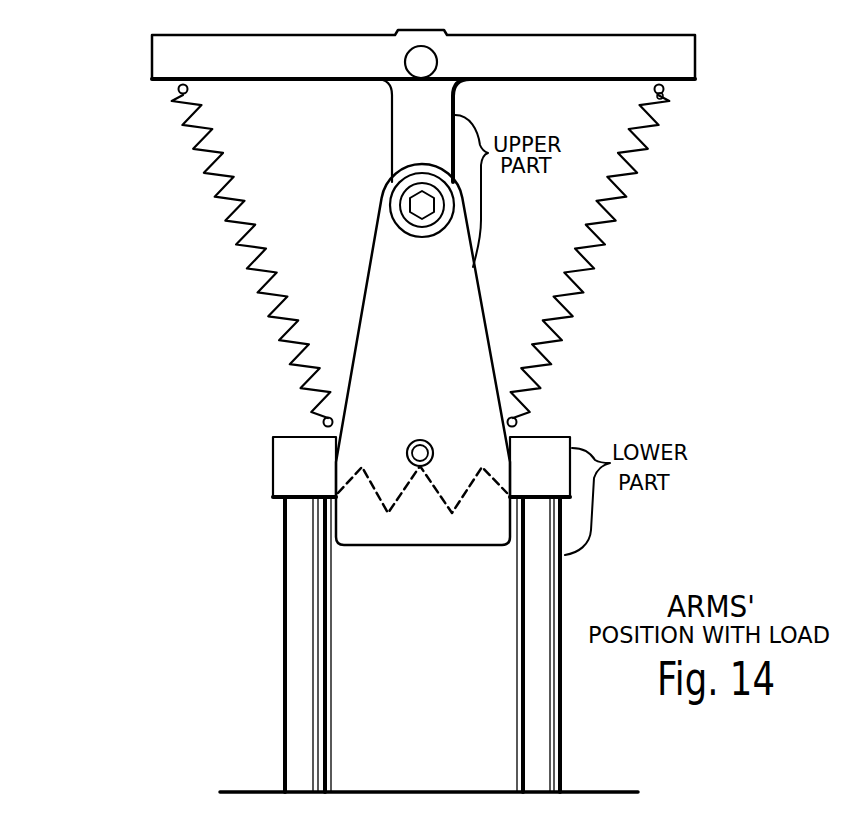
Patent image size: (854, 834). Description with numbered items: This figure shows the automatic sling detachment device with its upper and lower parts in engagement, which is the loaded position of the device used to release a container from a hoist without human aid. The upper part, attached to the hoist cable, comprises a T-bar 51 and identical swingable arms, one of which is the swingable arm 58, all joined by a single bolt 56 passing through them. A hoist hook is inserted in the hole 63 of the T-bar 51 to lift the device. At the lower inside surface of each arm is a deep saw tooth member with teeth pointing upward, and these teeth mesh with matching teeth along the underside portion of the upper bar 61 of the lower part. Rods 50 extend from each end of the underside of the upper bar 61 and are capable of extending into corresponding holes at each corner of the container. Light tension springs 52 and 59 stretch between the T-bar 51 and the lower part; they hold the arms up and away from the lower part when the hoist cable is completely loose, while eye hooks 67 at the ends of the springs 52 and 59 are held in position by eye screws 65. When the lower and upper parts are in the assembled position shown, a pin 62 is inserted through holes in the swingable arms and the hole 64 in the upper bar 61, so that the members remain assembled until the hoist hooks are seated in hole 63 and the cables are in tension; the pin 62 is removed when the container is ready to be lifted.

The rods 50 is at (285, 570).
The T-bar 51 is at (150, 62).
The light spring 52 is at (222, 195).
The bolt 56 is at (410, 203).
The swingable arm 58 is at (335, 448).
The light spring 59 is at (607, 213).
The upper bar 61 is at (273, 468).
The pin 62 is at (413, 466).
The hole 63 is at (410, 74).
The hole 64 is at (270, 790).
The eye screws 65 is at (177, 88).
The eye hooks 67 is at (666, 99).